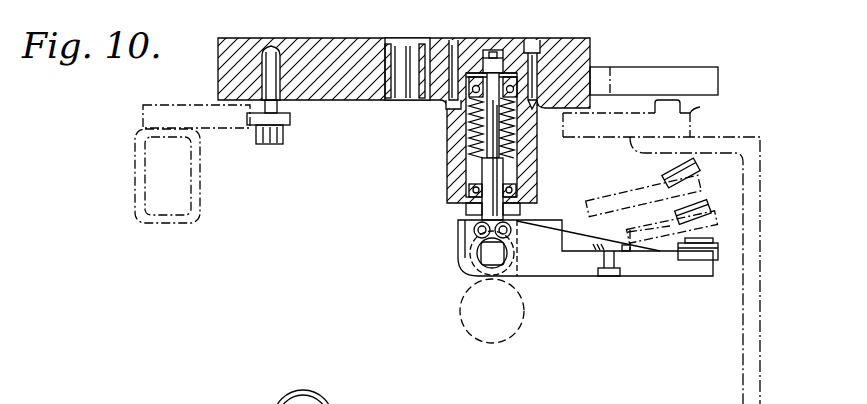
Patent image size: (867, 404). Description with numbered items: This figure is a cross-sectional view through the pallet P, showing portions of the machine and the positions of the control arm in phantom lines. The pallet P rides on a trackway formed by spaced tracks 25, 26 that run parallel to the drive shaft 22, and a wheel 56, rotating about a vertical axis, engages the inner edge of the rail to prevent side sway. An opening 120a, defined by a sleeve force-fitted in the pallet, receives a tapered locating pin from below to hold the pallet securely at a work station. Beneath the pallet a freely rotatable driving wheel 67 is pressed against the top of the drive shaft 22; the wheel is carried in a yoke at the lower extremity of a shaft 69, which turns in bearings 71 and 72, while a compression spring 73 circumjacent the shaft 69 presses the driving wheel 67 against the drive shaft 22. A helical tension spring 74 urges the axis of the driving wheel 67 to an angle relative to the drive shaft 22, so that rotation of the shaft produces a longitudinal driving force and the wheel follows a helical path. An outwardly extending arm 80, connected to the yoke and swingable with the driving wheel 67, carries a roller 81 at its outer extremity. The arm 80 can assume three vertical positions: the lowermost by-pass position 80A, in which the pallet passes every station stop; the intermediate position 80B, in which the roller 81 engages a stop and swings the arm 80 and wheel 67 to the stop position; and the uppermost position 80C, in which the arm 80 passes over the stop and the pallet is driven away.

The pallet P is at (599, 33).
The opening 120a is at (412, 52).
The track 26 is at (186, 100).
The wheel 56 is at (291, 119).
The bearing 71 is at (468, 106).
The compression spring 73 is at (478, 140).
The shaft 69 is at (490, 175).
The bearing 72 is at (480, 202).
The tension spring 74 is at (508, 215).
The driving wheel 67 is at (470, 276).
The drive shaft 22 is at (521, 322).
The arm 80 is at (605, 277).
The track 25 is at (700, 107).
The uppermost position 80C is at (700, 183).
The intermediate vertical position 80B is at (712, 228).
The roller 81 is at (720, 252).
The lowermost position 80A is at (713, 267).